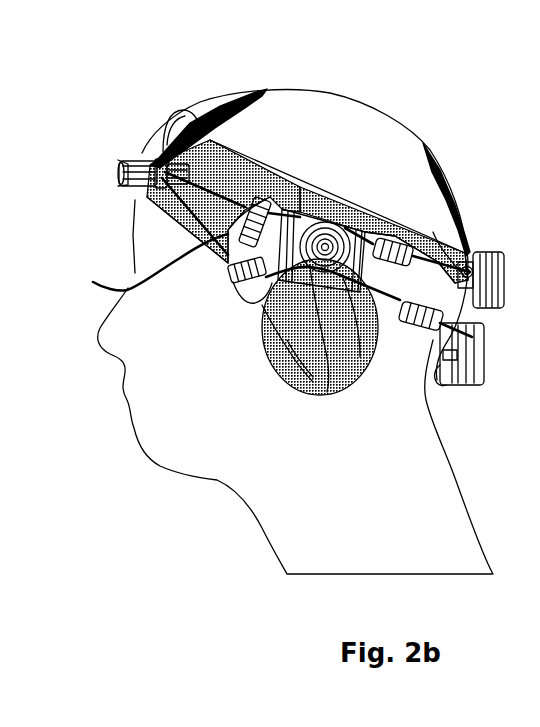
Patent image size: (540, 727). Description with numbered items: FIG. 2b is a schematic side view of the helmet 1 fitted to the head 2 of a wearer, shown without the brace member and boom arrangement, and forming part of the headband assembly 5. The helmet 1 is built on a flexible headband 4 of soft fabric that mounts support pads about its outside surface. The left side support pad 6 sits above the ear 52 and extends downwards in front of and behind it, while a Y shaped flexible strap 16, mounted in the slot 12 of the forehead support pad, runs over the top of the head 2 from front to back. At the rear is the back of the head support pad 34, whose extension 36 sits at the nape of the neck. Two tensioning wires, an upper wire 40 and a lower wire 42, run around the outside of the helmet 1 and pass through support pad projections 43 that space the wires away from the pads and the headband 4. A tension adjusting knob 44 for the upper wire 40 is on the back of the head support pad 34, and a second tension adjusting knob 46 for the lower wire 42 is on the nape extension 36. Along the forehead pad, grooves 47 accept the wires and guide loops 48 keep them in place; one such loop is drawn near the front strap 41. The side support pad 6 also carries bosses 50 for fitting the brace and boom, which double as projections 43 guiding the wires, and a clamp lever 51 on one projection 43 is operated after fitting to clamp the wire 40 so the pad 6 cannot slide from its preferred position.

The helmet 1 is at (471, 135).
The head 2 is at (388, 558).
The flexible headband 4 is at (250, 175).
The headband assembly 5 is at (537, 100).
The side support pad 6 is at (396, 380).
The slot 12 is at (138, 147).
The flexible strap 16 is at (241, 100).
The back of the head support pad 34 is at (470, 252).
The extension 36 is at (433, 367).
The upper tensioning wire 40 is at (420, 230).
The front strap 41 is at (133, 212).
The lower tensioning wire 42 is at (328, 379).
The support pad projection 43 is at (290, 188).
The tension adjusting knob 44 is at (506, 278).
The second tension adjusting knob 46 is at (490, 354).
The groove 47 is at (118, 188).
The guide loop 48 is at (116, 160).
The boss 50 is at (280, 340).
The clamp lever 51 is at (114, 231).
The ear 52 is at (328, 377).